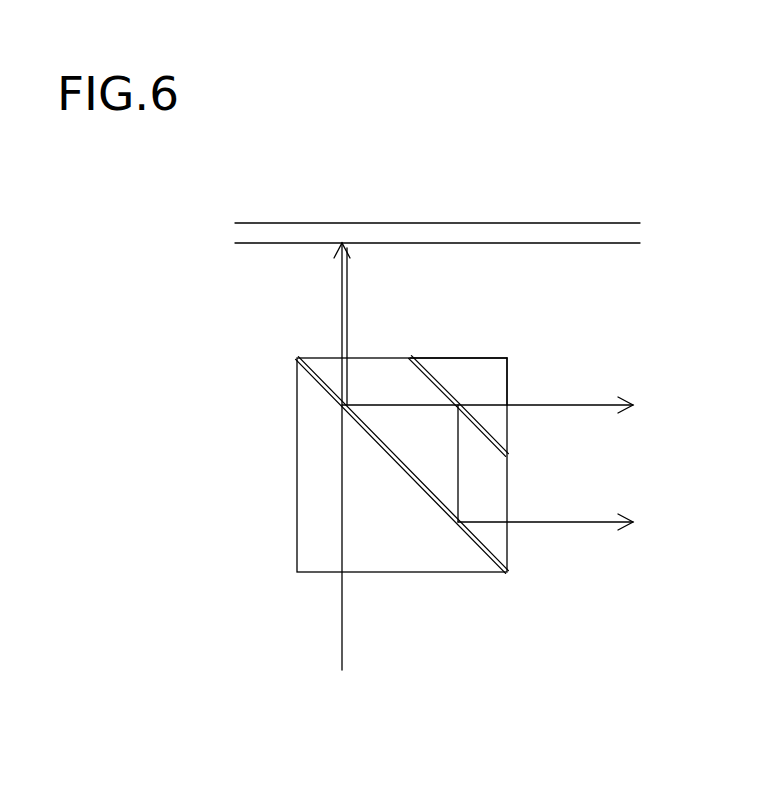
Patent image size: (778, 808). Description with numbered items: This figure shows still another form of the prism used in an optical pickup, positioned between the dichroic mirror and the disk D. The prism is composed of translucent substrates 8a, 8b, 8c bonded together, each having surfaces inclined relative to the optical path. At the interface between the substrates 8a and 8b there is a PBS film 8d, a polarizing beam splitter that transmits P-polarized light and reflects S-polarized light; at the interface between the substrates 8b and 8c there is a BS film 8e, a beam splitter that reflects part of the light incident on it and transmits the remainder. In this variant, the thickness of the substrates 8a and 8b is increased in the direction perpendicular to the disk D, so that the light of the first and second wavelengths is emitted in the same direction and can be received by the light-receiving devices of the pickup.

The disk D is at (557, 222).
The translucent substrate 8a is at (307, 463).
The translucent substrate 8b is at (375, 357).
The translucent substrate 8c is at (493, 380).
The PBS film 8d is at (425, 495).
The BS film 8e is at (493, 437).